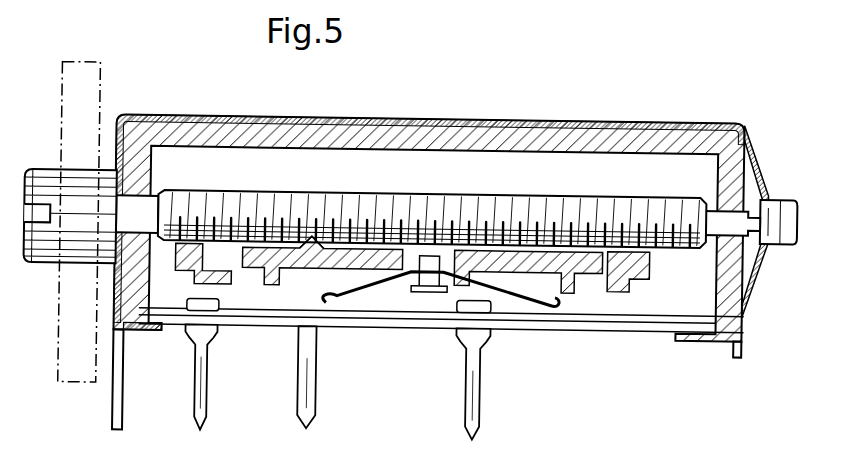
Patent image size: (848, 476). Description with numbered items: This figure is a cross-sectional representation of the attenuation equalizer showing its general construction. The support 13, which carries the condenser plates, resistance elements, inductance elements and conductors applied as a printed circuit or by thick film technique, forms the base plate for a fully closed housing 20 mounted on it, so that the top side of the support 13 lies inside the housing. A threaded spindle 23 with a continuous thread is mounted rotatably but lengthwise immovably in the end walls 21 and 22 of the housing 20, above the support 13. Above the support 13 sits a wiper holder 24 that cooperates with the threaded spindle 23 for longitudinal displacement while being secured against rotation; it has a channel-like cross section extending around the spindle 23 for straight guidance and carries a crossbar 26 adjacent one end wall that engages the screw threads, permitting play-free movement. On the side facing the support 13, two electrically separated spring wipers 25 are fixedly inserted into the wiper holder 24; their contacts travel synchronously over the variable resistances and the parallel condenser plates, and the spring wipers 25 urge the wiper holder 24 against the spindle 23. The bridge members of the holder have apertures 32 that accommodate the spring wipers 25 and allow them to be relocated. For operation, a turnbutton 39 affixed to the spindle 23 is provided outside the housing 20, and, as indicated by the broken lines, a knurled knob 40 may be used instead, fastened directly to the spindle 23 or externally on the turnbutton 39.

The support 13 is at (590, 334).
The housing 20 is at (447, 119).
The end wall 21 is at (727, 277).
The end wall 22 is at (130, 326).
The threaded spindle 23 is at (478, 207).
The wiper holder 24 is at (580, 269).
The spring wipers 25 is at (358, 306).
The crossbar 26 is at (316, 240).
The apertures 32 is at (232, 276).
The turnbutton 39 is at (40, 266).
The knurled knob 40 is at (98, 73).